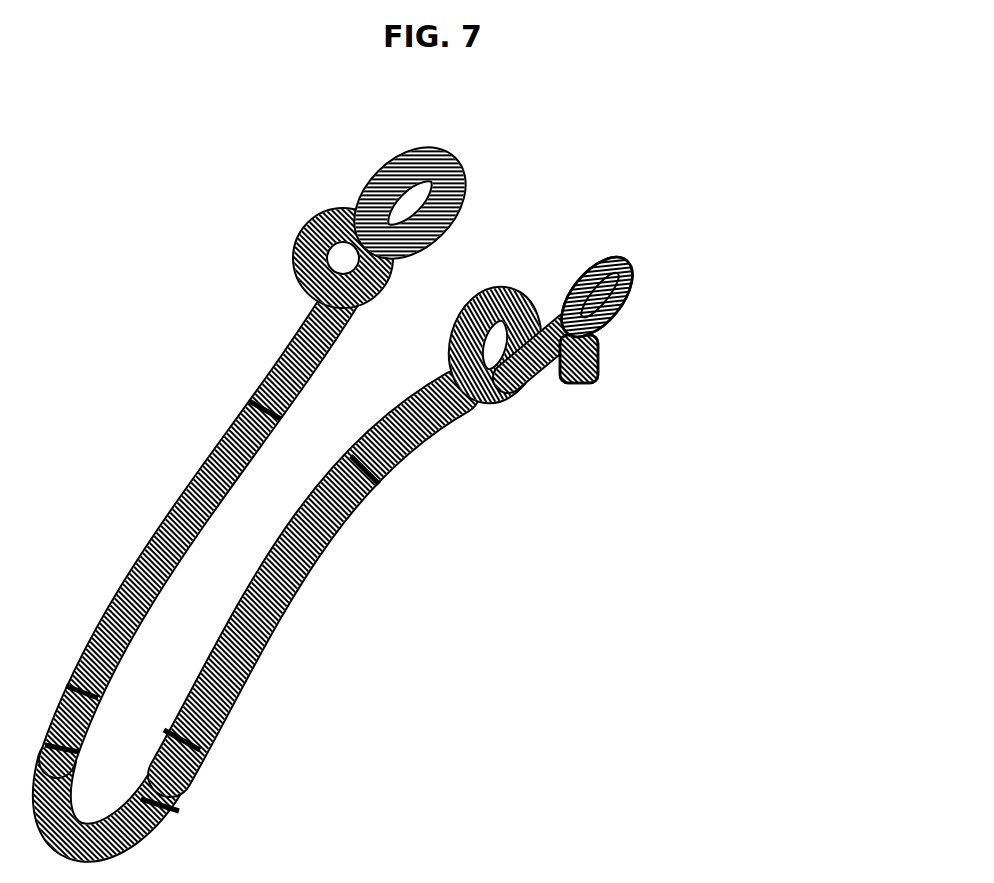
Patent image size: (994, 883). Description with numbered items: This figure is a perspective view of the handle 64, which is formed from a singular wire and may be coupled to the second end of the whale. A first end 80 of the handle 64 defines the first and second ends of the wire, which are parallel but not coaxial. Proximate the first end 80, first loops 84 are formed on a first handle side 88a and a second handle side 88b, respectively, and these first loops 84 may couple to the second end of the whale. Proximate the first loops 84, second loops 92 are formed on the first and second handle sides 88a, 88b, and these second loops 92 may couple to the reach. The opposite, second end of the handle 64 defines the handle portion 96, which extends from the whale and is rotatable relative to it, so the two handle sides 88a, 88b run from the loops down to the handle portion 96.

The handle 64 is at (480, 485).
The first handle side 88a is at (435, 442).
The second handle side 88b is at (297, 333).
The handle portion 96 is at (195, 768).
The second loops 92 is at (527, 387).
The first end 80 is at (597, 372).
The first loops 84 is at (680, 313).